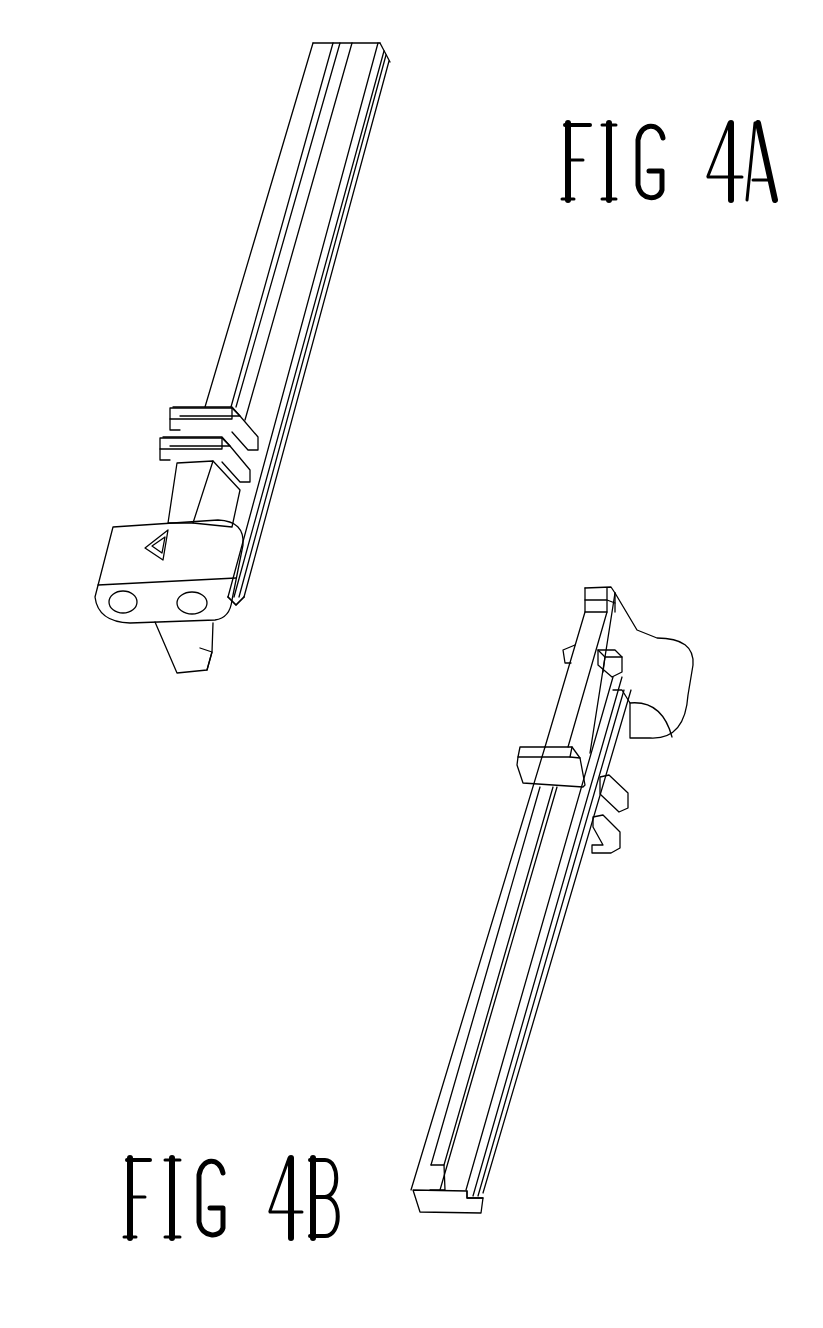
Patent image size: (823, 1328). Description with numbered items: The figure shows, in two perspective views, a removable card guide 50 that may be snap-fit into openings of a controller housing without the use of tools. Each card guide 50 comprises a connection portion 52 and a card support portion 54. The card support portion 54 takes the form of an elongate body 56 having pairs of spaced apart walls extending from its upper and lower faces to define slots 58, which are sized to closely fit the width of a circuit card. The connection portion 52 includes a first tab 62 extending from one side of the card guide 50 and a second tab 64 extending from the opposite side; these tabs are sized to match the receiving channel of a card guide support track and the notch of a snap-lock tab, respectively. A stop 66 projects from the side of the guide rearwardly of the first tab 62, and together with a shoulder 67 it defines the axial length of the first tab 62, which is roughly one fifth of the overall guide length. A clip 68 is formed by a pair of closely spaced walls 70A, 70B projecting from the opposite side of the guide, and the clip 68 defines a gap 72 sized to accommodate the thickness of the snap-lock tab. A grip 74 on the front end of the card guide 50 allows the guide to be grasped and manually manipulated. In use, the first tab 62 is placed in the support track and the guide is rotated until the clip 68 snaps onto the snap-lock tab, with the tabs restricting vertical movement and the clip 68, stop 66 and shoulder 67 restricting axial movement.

In FIG. 4A, the card guide 50 is at (293, 305).
In FIG. 4B, the card guide 50 is at (495, 982).
In FIG. 4A, the connection portion 52 is at (214, 516).
In FIG. 4B, the connection portion 52 is at (561, 713).
In FIG. 4A, the card support portion 54 is at (349, 208).
In FIG. 4B, the card support portion 54 is at (450, 1050).
In FIG. 4A, the elongate body 56 is at (298, 132).
In FIG. 4B, the elongate body 56 is at (478, 977).
In FIG. 4A, the slots 58 is at (392, 48).
In FIG. 4B, the slots 58 is at (480, 1198).
In FIG. 4B, the first tab 62 is at (560, 730).
In FIG. 4A, the second tab 64 is at (177, 507).
In FIG. 4B, the stop 66 is at (522, 770).
In FIG. 4B, the shoulder 67 is at (565, 663).
In FIG. 4A, the clip 68 is at (253, 447).
In FIG. 4A, the wall 70A is at (238, 527).
In FIG. 4A, the wall 70B is at (253, 410).
In FIG. 4A, the gap 72 is at (247, 463).
In FIG. 4A, the grip 74 is at (220, 583).